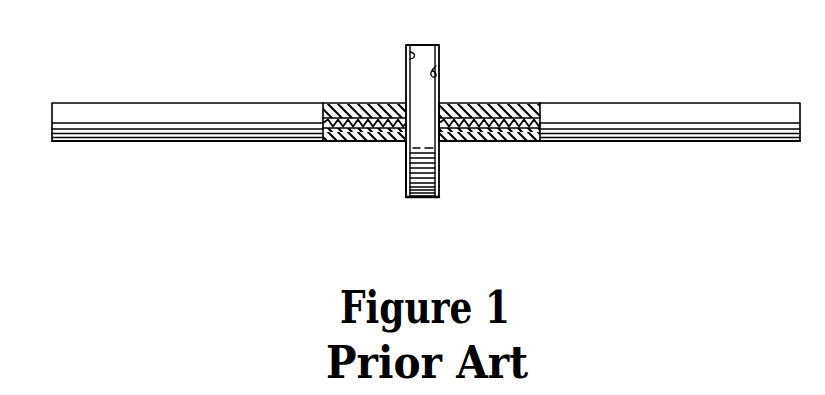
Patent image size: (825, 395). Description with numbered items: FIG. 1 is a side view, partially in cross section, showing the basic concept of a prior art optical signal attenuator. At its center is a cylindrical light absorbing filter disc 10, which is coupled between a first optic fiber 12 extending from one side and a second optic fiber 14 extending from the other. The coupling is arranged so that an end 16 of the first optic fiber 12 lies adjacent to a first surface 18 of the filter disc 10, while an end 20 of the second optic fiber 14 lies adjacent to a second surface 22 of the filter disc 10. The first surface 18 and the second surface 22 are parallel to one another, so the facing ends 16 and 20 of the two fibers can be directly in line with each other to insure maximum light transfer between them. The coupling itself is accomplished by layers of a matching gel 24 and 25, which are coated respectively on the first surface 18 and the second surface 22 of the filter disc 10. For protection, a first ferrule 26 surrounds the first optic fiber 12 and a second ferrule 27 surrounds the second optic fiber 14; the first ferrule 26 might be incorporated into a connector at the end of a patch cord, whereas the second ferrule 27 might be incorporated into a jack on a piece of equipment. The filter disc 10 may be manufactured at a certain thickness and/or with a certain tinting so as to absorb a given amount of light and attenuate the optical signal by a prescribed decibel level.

The light absorbing filter disc 10 is at (432, 45).
The first optic fiber 12 is at (347, 105).
The second optic fiber 14 is at (528, 107).
The end of the first optic fiber 16 is at (404, 105).
The first surface of the filter disc 18 is at (406, 53).
The end of the second optic fiber 20 is at (447, 108).
The second surface of the filter disc 22 is at (436, 66).
The layer of matching gel 24 is at (406, 183).
The layer of matching gel 25 is at (438, 172).
The first ferrule 26 is at (353, 142).
The second ferrule 27 is at (494, 143).